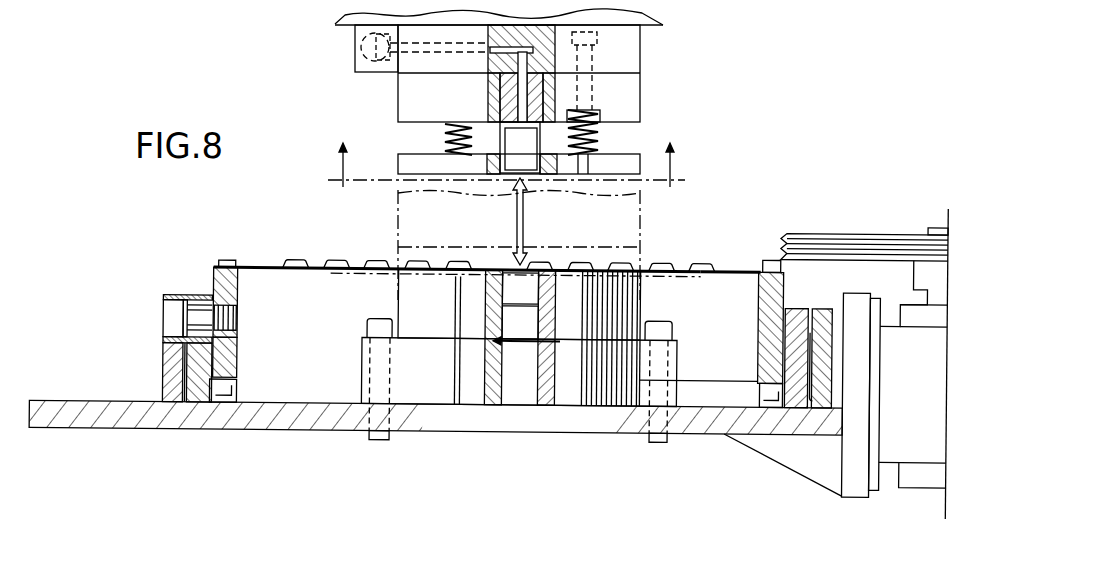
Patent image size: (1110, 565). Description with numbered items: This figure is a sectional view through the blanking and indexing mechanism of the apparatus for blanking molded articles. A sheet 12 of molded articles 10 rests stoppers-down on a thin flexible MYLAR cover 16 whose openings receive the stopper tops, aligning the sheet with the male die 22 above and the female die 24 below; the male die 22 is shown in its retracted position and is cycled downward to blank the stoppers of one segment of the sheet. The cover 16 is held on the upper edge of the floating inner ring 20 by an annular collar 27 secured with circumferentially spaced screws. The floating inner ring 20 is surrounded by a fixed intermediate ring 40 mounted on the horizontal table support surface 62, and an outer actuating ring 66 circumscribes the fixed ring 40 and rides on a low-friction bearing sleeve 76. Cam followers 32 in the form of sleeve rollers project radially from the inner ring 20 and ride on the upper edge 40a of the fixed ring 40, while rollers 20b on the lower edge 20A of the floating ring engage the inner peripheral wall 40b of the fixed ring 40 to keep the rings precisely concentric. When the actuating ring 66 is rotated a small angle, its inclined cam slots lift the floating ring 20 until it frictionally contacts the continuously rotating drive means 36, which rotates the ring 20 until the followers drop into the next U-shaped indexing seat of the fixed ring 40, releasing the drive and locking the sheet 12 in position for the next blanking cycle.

The molded articles 10 is at (507, 221).
The sheet 12 is at (274, 259).
The thin flexible cover 16 is at (741, 268).
The floating inner ring 20 is at (213, 269).
The lower edge of the floating ring 20A is at (793, 338).
The cam follower rollers 20b is at (242, 391).
The male die 22 is at (637, 88).
The female die 24 is at (402, 284).
The annular collar 27 is at (224, 261).
The cam followers 32 is at (175, 297).
The drive means 36 is at (853, 229).
The fixed intermediate ring 40 is at (802, 304).
The upper edge of the fixed ring 40a is at (872, 284).
The inner peripheral wall of the fixed ring 40b is at (300, 362).
The table support surface 62 is at (78, 404).
The actuating ring 66 is at (165, 352).
The bearing sleeve 76 is at (179, 389).